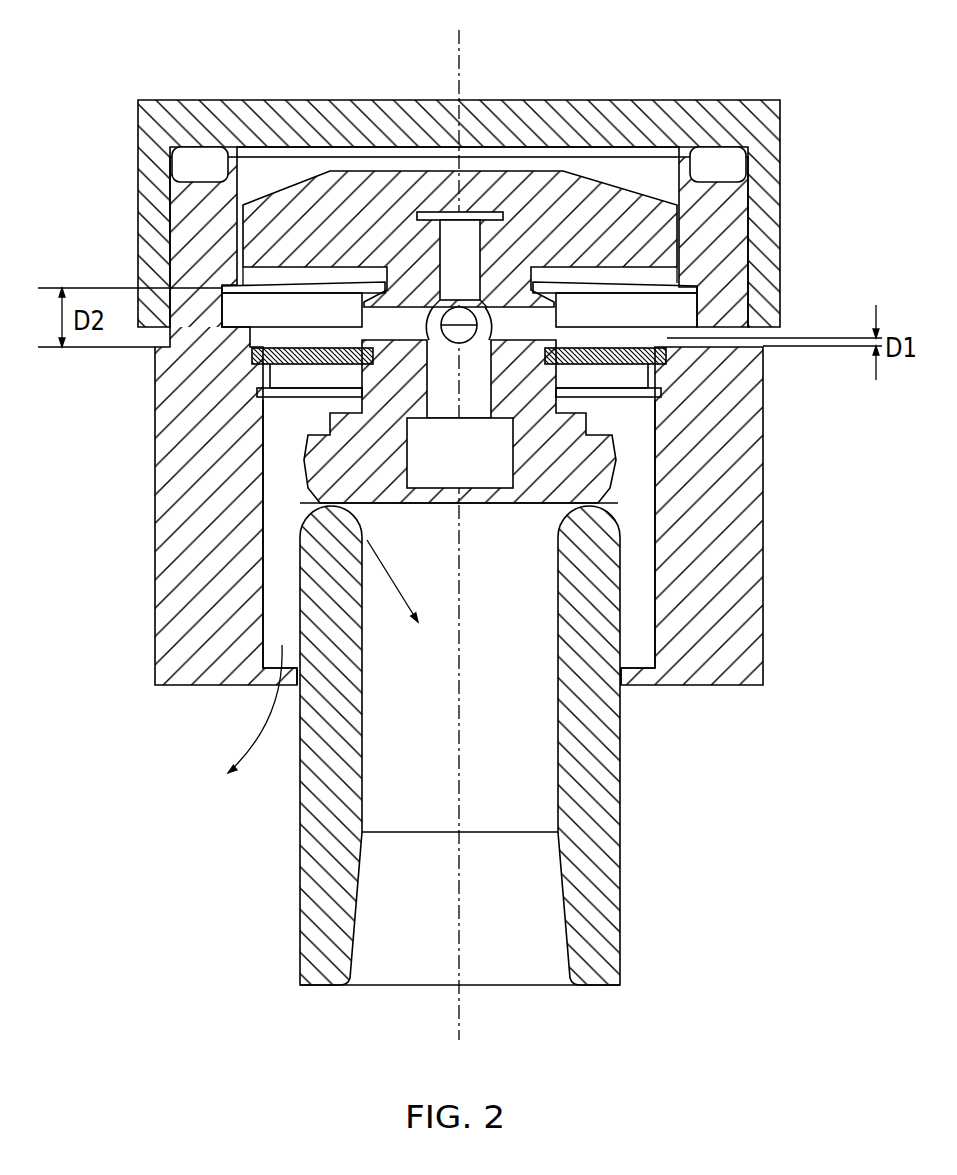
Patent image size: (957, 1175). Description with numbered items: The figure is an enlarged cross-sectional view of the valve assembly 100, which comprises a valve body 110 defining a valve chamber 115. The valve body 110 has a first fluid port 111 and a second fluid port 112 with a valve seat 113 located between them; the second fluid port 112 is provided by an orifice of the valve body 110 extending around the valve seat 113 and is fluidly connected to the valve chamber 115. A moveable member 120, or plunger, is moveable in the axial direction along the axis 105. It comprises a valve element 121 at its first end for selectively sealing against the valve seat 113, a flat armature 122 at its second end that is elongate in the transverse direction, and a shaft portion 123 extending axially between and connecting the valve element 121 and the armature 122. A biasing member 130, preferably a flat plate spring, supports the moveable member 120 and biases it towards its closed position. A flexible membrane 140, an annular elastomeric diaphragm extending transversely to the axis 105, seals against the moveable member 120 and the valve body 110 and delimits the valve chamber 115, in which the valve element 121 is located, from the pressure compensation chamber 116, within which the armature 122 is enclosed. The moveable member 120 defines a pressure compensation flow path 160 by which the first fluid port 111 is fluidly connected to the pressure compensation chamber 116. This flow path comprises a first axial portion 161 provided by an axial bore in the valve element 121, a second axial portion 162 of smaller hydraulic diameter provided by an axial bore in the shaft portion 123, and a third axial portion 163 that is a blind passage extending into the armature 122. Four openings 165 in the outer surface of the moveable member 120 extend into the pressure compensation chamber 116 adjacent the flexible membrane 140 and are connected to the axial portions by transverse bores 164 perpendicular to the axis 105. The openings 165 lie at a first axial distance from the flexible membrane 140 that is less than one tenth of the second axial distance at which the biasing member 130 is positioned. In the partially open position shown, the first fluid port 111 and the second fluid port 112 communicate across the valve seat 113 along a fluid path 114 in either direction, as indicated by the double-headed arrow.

The valve assembly 100 is at (98, 165).
The axis 105 is at (464, 52).
The valve body 110 is at (692, 525).
The first fluid port 111 is at (498, 953).
The second fluid port 112 is at (648, 657).
The valve seat 113 is at (588, 613).
The fluid path 114 is at (282, 642).
The valve chamber 115 is at (632, 405).
The pressure compensation chamber 116 is at (168, 110).
The moveable member 120 is at (645, 185).
The valve element 121 is at (307, 445).
The armature 122 is at (277, 217).
The shaft portion 123 is at (700, 375).
The biasing member 130 is at (278, 276).
The flexible membrane 140 is at (262, 356).
The pressure compensation flow path 160 is at (480, 508).
The first axial portion 161 is at (490, 462).
The second axial portion 162 is at (440, 378).
The third axial portion 163 is at (447, 257).
The transverse bores 164 is at (533, 290).
The openings 165 is at (556, 319).